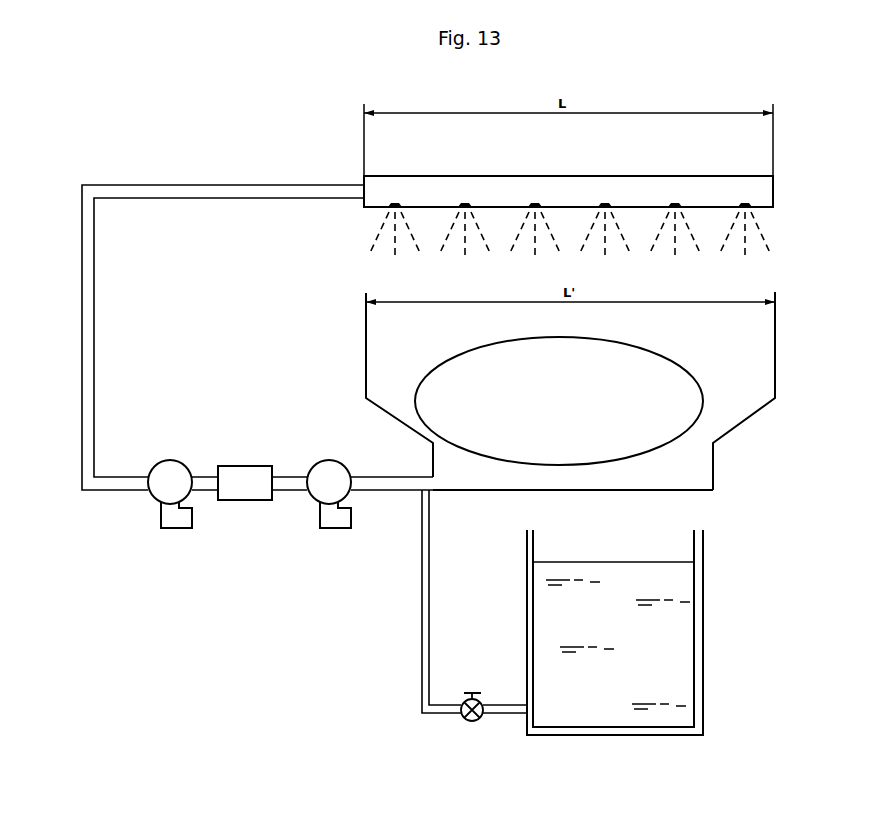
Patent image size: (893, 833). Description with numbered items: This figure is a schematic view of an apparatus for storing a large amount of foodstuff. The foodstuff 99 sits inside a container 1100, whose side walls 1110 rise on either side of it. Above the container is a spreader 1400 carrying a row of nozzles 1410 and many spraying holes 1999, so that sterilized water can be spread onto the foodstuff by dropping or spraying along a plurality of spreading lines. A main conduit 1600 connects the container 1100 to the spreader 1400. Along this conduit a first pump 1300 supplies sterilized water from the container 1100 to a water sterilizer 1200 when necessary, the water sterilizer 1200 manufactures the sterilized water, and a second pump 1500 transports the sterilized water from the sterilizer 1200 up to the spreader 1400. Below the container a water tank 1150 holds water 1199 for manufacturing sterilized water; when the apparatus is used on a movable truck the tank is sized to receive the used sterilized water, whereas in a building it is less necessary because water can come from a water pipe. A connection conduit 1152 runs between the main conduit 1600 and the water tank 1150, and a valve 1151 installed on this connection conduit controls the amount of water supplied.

The spreader 1400 is at (470, 180).
The nozzles 1410 is at (605, 206).
The spraying holes 1999 is at (762, 236).
The tank side wall 1110 is at (366, 383).
The container 1100 is at (570, 405).
The foodstuff 99 is at (690, 372).
The main conduit 1600 is at (111, 491).
The second pump 1500 is at (175, 529).
The water sterilizer 1200 is at (242, 501).
The first pump 1300 is at (336, 529).
The connection conduit 1152 is at (422, 626).
The valve 1151 is at (472, 722).
The water tank 1150 is at (695, 615).
The liquid in reservoir 1199 is at (680, 665).